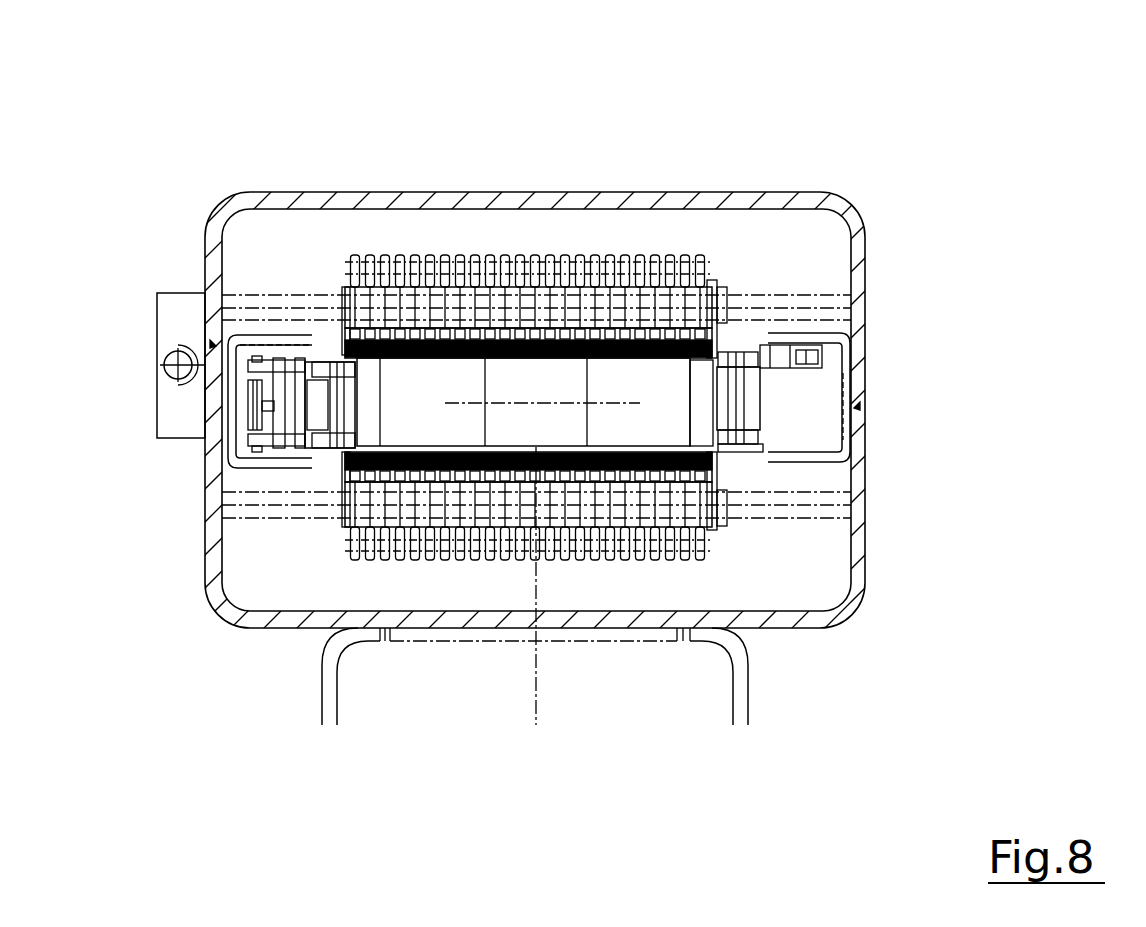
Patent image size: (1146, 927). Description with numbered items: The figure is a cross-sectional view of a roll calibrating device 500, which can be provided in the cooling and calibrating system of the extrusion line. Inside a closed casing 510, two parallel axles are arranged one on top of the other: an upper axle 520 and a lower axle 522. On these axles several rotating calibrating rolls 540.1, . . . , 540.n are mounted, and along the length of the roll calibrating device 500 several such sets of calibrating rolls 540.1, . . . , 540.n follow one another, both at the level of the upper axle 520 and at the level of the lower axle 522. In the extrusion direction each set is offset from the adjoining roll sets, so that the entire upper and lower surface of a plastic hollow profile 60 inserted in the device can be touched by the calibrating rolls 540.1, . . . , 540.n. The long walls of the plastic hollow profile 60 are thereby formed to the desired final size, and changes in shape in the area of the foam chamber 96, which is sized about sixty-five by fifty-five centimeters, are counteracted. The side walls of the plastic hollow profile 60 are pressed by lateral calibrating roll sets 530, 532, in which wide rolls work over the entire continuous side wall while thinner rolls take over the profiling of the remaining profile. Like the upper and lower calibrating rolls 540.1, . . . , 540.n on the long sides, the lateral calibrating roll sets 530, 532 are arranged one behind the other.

The roll calibrating device 500 is at (912, 104).
The closed casing 510 is at (290, 192).
The upper axle 520 is at (808, 292).
The lower axle 522 is at (805, 507).
The lateral calibrating roll set 530 is at (748, 398).
The lateral calibrating roll set 532 is at (318, 415).
The calibrating roll 540.1 is at (352, 256).
The calibrating roll 540.n is at (701, 256).
The foam chamber 96 is at (537, 382).
The plastic hollow profile 60 is at (847, 455).